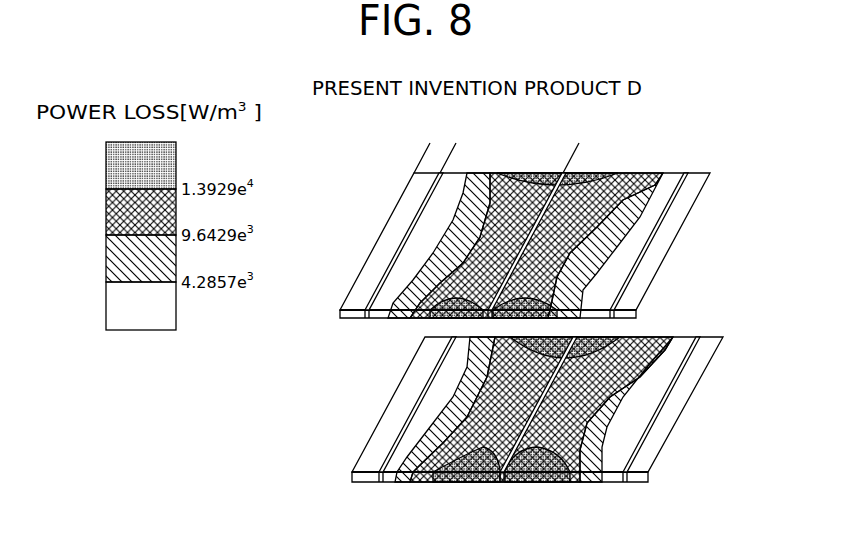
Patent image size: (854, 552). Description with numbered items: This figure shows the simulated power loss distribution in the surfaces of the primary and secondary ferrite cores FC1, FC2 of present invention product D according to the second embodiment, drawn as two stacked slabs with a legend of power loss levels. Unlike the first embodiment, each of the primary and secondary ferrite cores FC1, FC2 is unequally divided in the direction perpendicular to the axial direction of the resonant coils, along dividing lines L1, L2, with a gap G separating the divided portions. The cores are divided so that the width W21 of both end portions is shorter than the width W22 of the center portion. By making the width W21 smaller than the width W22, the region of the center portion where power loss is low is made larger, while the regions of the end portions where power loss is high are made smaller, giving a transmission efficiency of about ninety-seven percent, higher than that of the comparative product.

The secondary ferrite core FC2 is at (410, 196).
The dividing line L2 is at (408, 228).
The primary ferrite core FC1 is at (409, 366).
The dividing line L1 is at (420, 392).
The gap G is at (445, 171).
The width of both end portions W21 is at (455, 143).
The width of center portion W22 is at (578, 143).